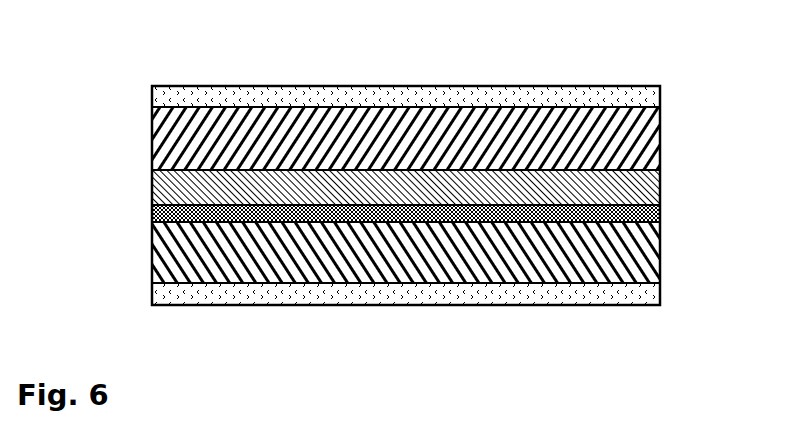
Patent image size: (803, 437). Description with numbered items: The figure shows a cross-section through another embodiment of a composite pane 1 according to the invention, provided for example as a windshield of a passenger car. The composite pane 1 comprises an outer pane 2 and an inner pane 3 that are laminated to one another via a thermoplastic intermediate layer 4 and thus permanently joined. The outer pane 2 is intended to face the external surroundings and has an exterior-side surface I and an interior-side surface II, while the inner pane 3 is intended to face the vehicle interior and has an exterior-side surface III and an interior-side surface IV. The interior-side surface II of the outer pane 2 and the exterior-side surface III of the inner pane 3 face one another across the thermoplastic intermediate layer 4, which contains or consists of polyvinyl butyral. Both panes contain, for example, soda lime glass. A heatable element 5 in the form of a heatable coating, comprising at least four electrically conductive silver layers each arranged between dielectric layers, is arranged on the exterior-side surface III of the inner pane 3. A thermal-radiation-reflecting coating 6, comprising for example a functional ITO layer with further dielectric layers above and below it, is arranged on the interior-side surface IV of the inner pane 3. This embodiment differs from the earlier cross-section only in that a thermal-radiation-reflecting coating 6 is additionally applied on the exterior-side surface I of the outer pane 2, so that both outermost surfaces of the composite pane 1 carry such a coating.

The composite pane 1 is at (157, 65).
The outer pane 2 is at (157, 132).
The inner pane 3 is at (157, 265).
The thermoplastic intermediate layer 4 is at (155, 192).
The heatable element 5 is at (152, 218).
The thermal-radiation-reflecting coating 6 is at (157, 88).
The exterior-side surface of the outer pane I is at (618, 107).
The interior-side surface of the outer pane II is at (620, 172).
The exterior-side surface of the inner pane III is at (652, 220).
The interior-side surface of the inner pane IV is at (618, 283).